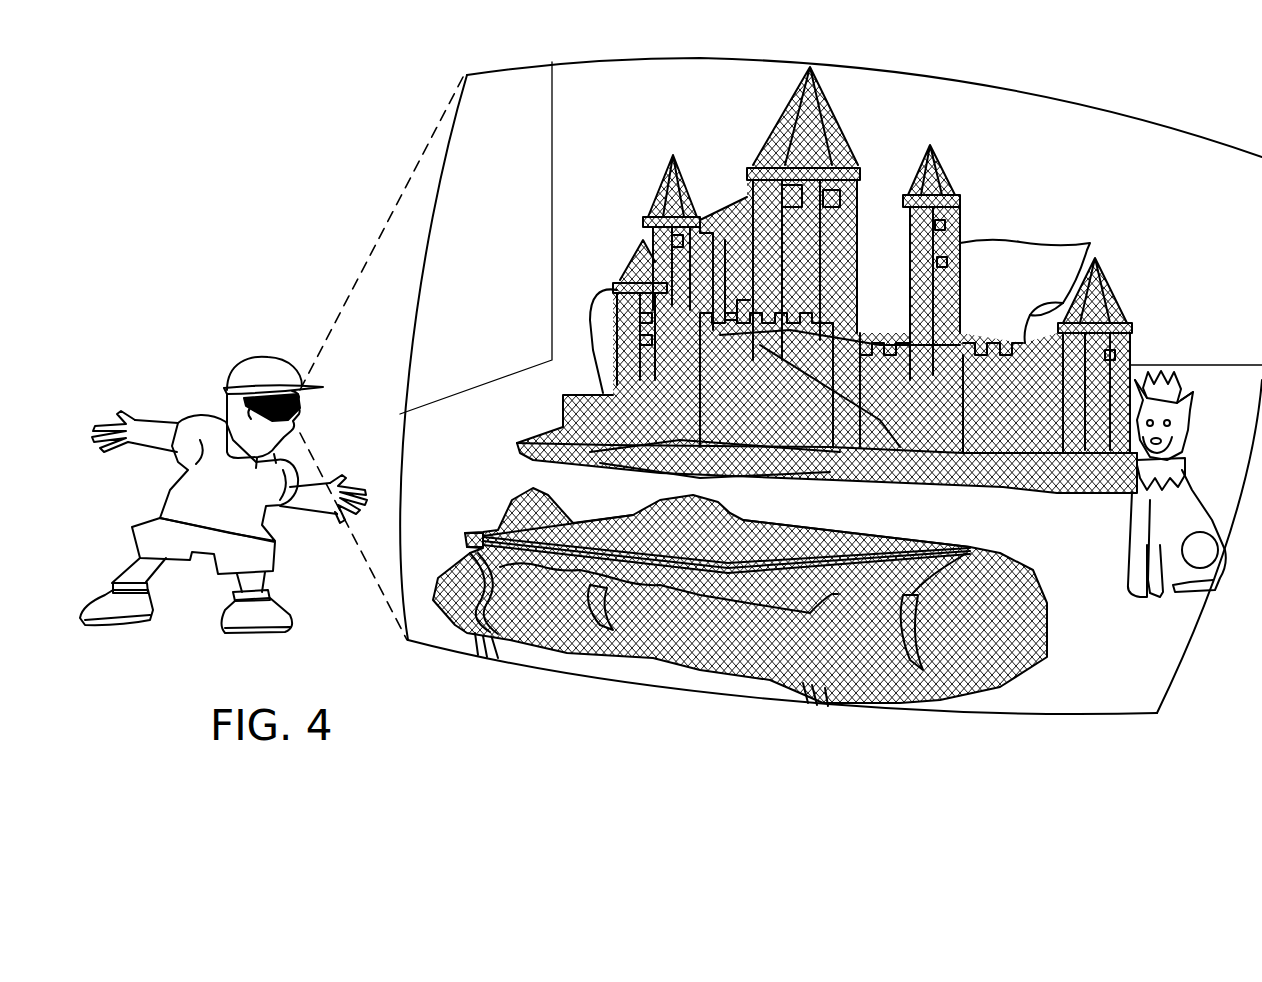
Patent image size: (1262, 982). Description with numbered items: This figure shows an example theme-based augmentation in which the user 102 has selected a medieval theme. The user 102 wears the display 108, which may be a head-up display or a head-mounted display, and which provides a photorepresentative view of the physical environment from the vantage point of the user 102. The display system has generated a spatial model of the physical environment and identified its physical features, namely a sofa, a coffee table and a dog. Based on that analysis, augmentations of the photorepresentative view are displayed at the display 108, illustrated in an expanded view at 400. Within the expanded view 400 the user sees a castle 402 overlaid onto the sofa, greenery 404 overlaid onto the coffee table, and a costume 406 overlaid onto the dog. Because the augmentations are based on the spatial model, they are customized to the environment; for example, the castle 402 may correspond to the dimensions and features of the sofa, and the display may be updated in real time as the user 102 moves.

The user 102 is at (237, 511).
The display 108 is at (228, 387).
The expanded view 400 is at (507, 56).
The castle 402 is at (765, 127).
The greenery 404 is at (508, 496).
The costume 406 is at (1187, 376).